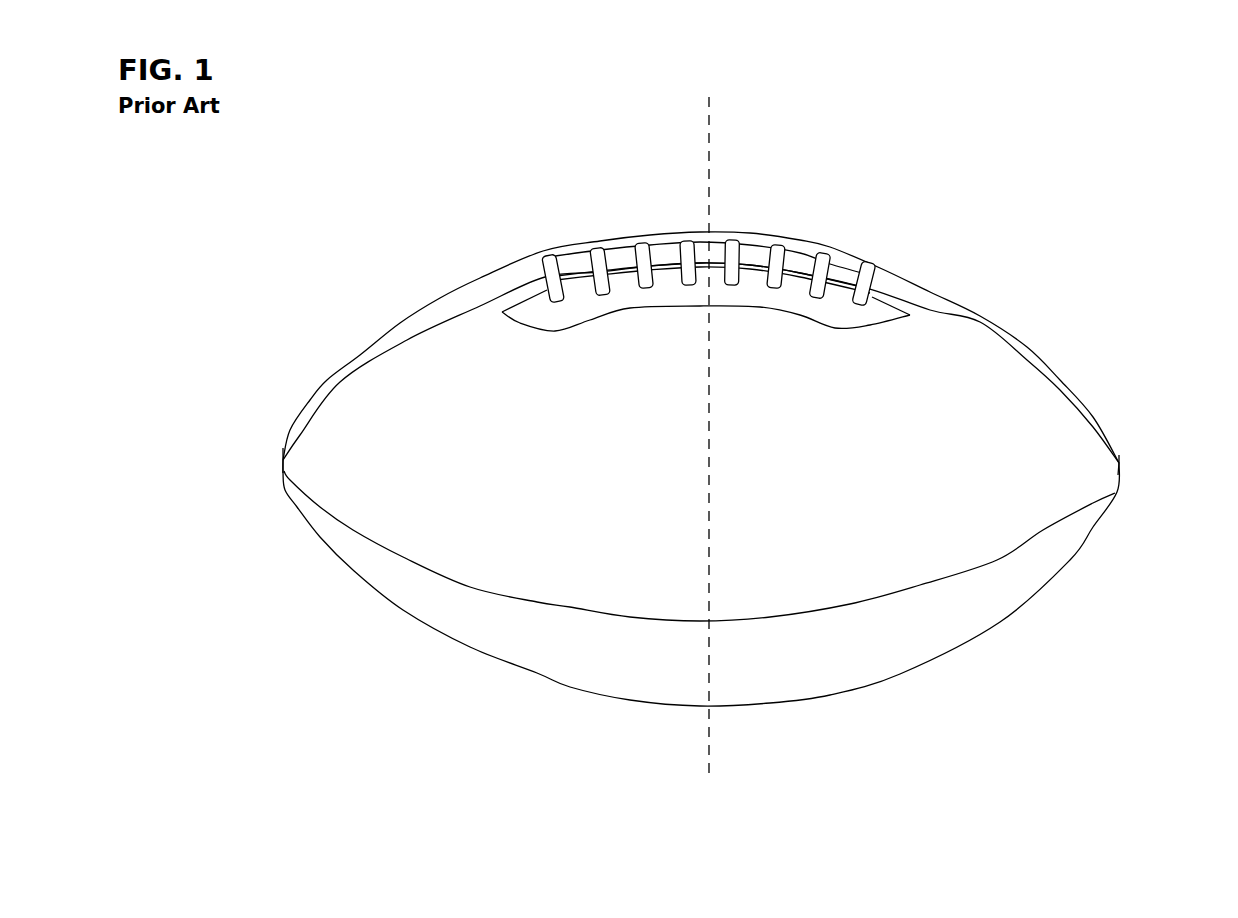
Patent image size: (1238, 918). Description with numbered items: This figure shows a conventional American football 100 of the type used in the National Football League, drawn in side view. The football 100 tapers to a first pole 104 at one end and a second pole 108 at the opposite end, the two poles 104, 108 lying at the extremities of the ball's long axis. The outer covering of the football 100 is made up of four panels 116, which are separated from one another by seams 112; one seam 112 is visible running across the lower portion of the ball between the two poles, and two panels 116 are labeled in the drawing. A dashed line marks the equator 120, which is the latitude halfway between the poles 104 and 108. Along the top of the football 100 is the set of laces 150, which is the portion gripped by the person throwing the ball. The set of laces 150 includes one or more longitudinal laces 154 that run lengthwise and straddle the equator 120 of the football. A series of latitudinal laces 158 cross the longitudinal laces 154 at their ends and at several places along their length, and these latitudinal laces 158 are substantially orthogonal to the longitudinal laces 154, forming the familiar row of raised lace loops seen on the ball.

The football 100 is at (166, 203).
The first pole 104 is at (278, 460).
The second pole 108 is at (1119, 470).
The seams 112 is at (908, 590).
The panels 116 is at (918, 474).
The equator 120 is at (715, 743).
The set of laces 150 is at (537, 240).
The longitudinal laces 154 is at (797, 262).
The latitudinal laces 158 is at (553, 287).